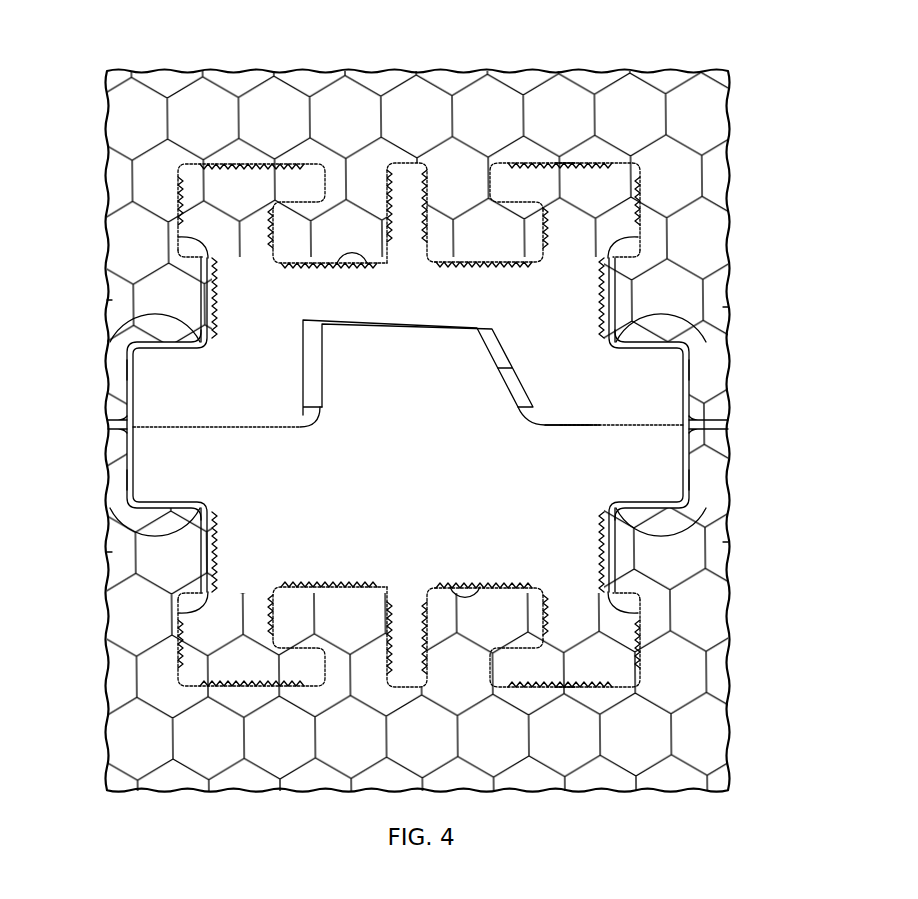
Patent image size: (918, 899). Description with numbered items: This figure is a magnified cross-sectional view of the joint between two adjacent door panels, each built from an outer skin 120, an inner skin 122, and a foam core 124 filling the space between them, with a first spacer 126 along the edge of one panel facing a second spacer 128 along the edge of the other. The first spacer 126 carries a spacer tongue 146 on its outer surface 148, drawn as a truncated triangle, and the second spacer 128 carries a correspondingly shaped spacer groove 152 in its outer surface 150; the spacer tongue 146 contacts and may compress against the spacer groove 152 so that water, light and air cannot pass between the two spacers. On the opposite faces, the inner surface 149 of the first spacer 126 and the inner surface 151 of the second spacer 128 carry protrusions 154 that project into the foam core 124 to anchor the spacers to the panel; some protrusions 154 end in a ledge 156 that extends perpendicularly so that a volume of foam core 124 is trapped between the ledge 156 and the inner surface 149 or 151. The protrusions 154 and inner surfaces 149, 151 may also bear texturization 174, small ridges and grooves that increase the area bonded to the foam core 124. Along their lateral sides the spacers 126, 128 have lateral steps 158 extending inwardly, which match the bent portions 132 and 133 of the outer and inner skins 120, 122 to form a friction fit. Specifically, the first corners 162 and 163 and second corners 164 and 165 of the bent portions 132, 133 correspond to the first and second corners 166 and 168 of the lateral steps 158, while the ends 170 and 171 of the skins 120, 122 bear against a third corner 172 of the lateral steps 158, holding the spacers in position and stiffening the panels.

The outer skin 120 is at (730, 420).
The inner skin 122 is at (112, 420).
The foam core 124 is at (525, 71).
The first spacer 126 is at (565, 687).
The second spacer 128 is at (565, 163).
The bent portion of the outer skin 132 is at (715, 307).
The bent portion of the inner skin 133 is at (117, 305).
The spacer tongue 146 is at (487, 345).
The outer surface of the first spacer 148 is at (577, 422).
The inner surface of the first spacer 149 is at (455, 587).
The outer surface of the second spacer 150 is at (588, 428).
The inner surface of the second spacer 151 is at (352, 265).
The spacer groove 152 is at (498, 378).
The protrusions 154 is at (200, 163).
The ledge 156 is at (300, 163).
The lateral steps 158 is at (222, 290).
The first corner of the outer skin bent portion 162 is at (695, 350).
The first corner of the inner skin bent portion 163 is at (125, 368).
The second corner of the outer skin bent portion 164 is at (700, 345).
The second corner of the inner skin bent portion 165 is at (125, 345).
The first corner of the lateral step 166 is at (148, 368).
The second corner of the lateral step 168 is at (224, 340).
The end of the outer skin 170 is at (638, 245).
The end of the inner skin 171 is at (178, 245).
The third corner of the lateral step 172 is at (222, 262).
The texturization 174 is at (225, 170).